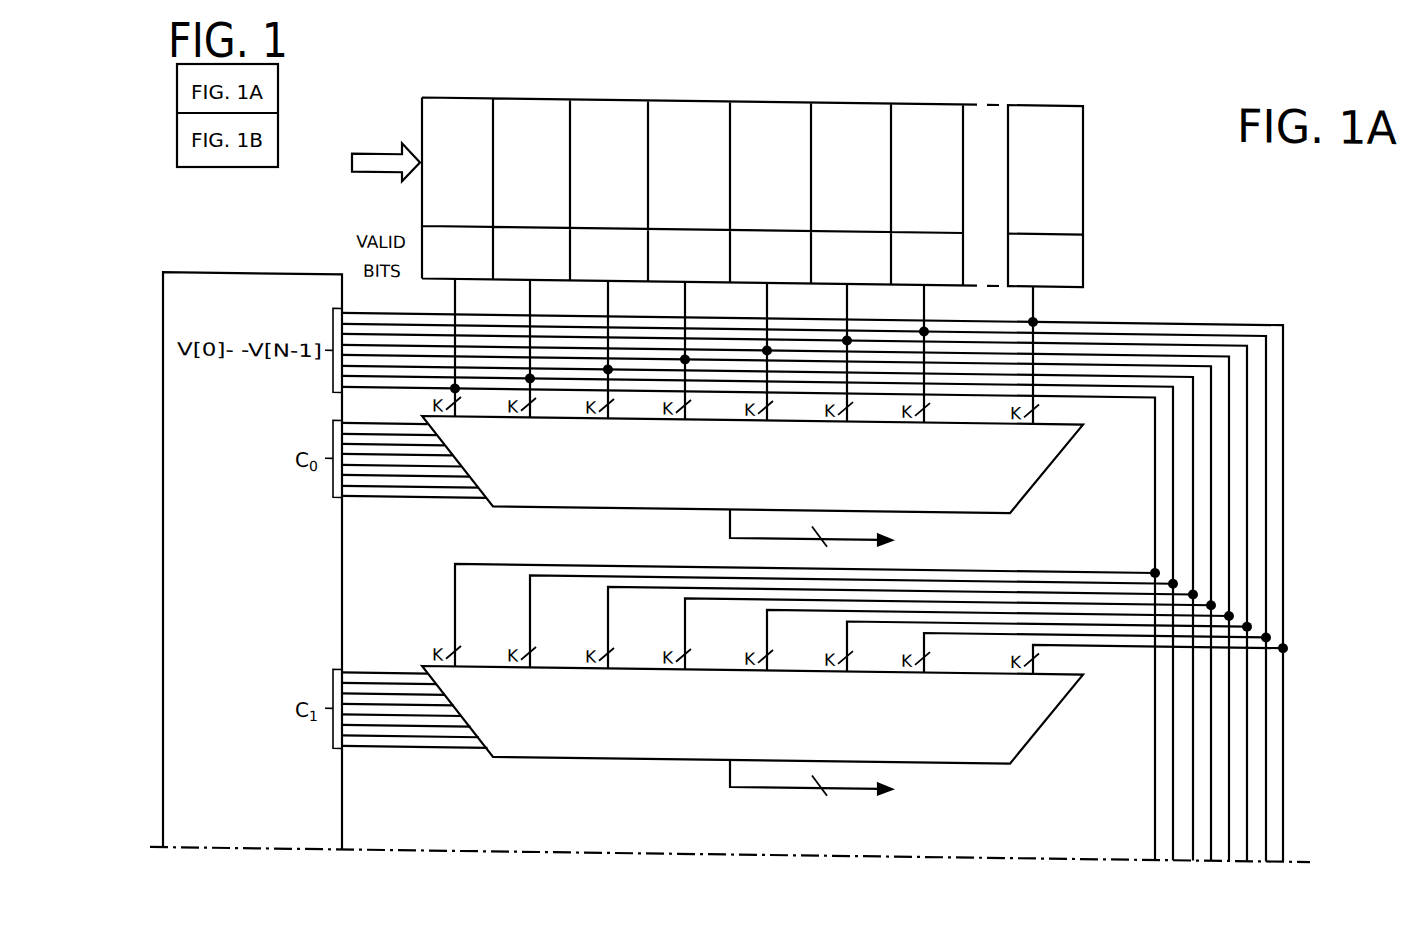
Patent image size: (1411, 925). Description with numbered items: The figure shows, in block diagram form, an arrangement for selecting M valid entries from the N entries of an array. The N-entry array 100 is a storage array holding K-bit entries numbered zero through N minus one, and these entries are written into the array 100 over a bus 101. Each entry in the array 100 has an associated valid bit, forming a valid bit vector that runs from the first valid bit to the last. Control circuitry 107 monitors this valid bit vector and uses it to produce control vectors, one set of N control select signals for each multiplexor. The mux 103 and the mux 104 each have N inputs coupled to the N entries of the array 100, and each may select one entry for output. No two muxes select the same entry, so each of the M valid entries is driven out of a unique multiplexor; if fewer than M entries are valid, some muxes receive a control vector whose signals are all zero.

The N-entry array 100 is at (418, 119).
The bus 101 is at (370, 170).
The control circuitry 107 is at (255, 268).
The mux 103 is at (555, 500).
The mux 104 is at (555, 751).